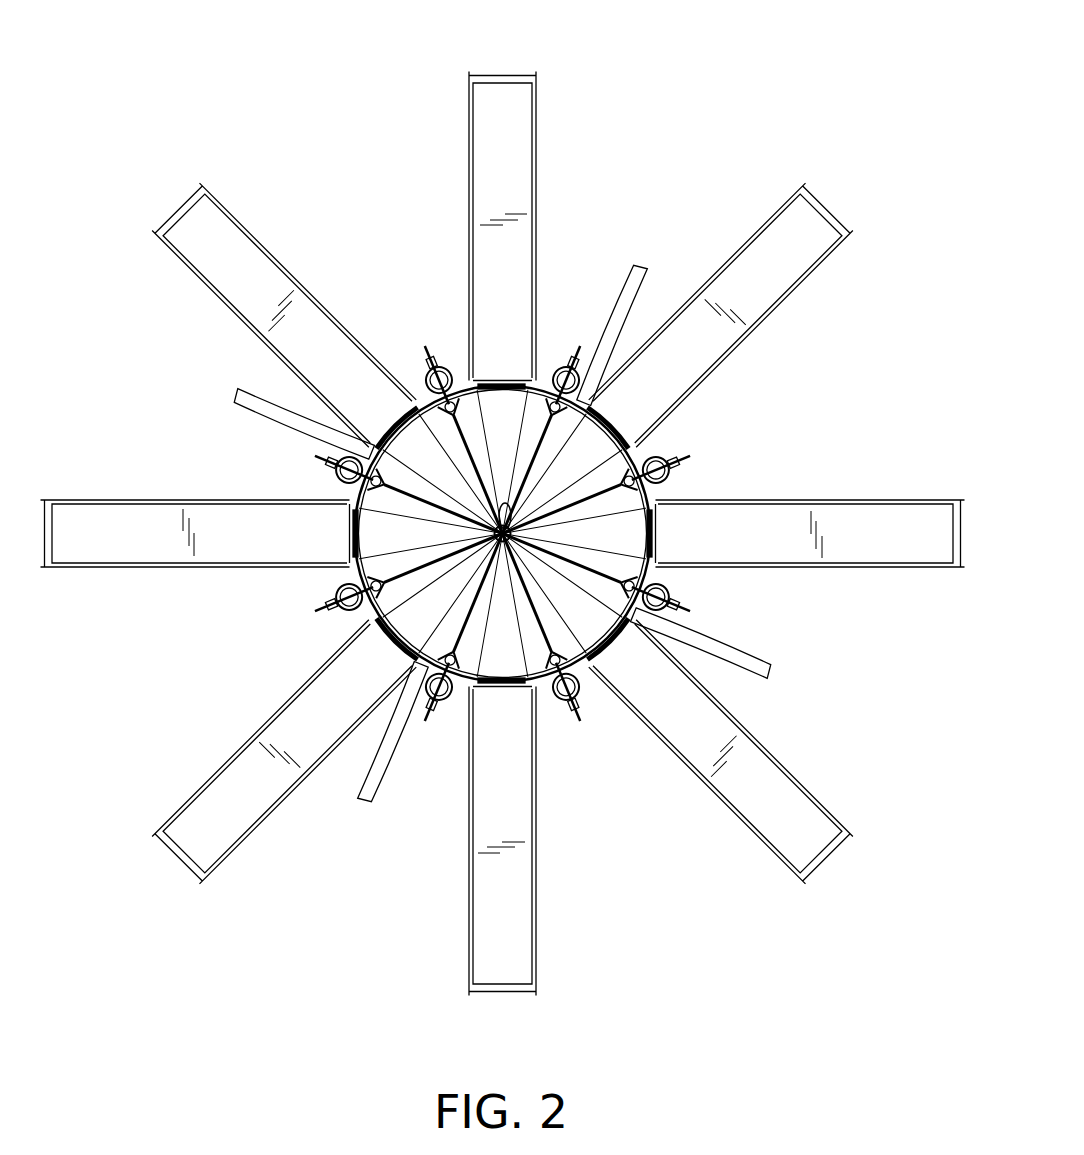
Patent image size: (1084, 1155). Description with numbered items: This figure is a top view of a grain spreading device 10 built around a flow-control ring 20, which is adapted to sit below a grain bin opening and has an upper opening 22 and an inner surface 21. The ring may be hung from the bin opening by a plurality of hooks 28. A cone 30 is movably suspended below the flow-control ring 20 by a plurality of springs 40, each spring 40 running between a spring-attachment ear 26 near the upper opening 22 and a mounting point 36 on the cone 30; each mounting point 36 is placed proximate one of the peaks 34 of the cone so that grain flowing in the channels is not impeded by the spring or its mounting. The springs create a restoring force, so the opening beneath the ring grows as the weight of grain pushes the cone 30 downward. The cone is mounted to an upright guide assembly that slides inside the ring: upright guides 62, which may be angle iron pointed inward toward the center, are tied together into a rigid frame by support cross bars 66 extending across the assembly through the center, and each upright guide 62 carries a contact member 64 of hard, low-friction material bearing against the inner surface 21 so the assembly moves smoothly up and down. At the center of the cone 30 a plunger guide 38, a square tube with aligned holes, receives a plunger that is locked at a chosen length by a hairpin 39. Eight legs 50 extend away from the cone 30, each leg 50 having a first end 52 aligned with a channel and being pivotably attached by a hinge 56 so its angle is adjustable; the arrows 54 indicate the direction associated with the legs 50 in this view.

The grain spreading device 10 is at (735, 62).
The flow-control ring 20 is at (652, 490).
The inner surface 21 is at (470, 386).
The upper opening 22 is at (345, 500).
The spring-attachment ear 26 is at (430, 368).
The hook 28 is at (640, 262).
The cone 30 is at (655, 505).
The peak 34 is at (608, 420).
The mounting point 36 is at (425, 372).
The plunger guide 38 is at (515, 533).
The hairpin 39 is at (505, 500).
The spring 40 is at (420, 378).
The leg 50 is at (275, 257).
The first end 52 is at (345, 525).
The load arrow 54 is at (497, 72).
The hinge 56 is at (405, 425).
The upright guide 62 is at (382, 478).
The contact member 64 is at (478, 690).
The support cross bar 66 is at (548, 448).